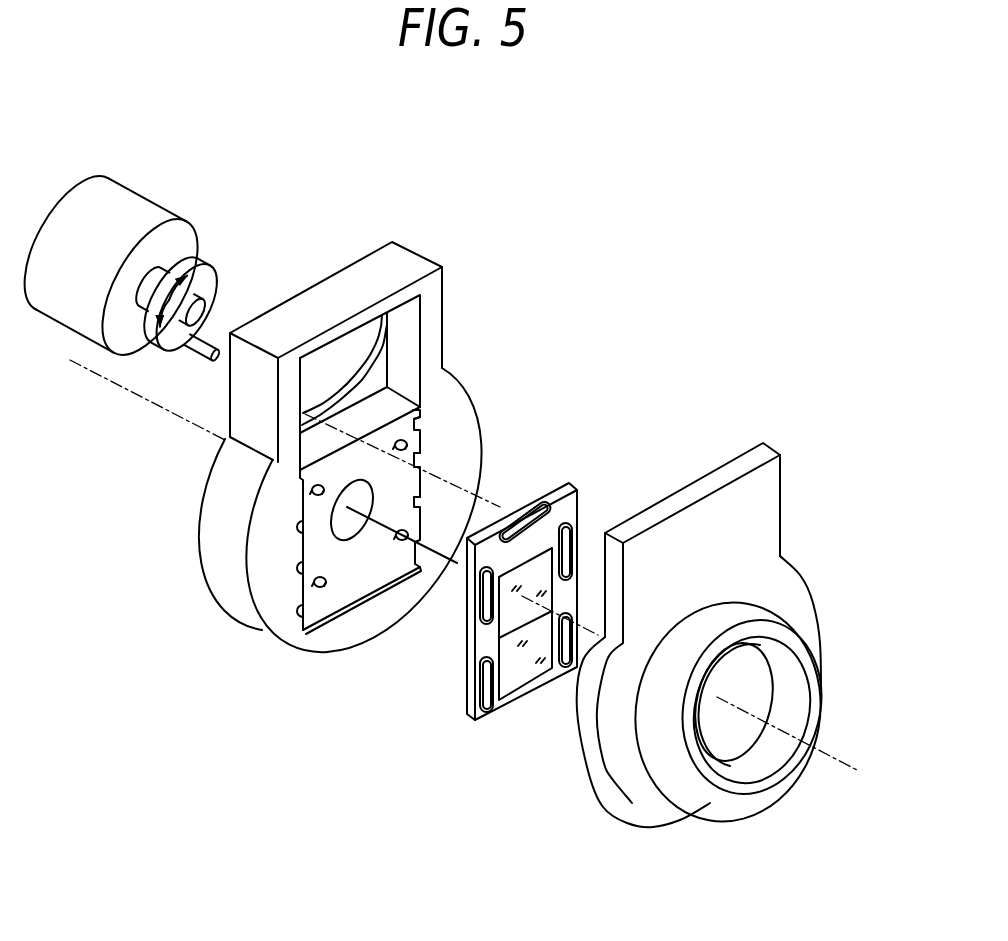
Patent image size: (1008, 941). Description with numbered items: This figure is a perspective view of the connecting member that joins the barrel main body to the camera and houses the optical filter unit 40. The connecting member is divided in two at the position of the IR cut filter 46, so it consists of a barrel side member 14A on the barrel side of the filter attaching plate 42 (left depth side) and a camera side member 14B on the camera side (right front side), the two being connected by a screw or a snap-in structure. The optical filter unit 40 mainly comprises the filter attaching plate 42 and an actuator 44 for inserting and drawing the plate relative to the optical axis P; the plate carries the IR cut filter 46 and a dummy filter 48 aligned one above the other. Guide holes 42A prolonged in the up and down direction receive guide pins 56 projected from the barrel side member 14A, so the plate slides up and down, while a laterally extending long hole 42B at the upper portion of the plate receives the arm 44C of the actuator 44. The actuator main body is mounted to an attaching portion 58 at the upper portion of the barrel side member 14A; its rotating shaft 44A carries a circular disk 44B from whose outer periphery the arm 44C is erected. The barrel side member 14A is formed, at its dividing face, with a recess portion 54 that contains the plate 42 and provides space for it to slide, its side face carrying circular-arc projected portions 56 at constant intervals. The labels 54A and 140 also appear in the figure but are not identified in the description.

The barrel side member 14A is at (458, 296).
The camera side member 14B is at (802, 503).
The optical filter unit 40 is at (609, 437).
The filter attaching plate 42 is at (569, 486).
The guide hole 42A is at (578, 530).
The long hole 42B is at (530, 518).
The actuator 44 is at (144, 205).
The rotating shaft 44A is at (208, 270).
The circular disk 44B is at (212, 262).
The arm 44C is at (198, 358).
The IR cut filter 46 is at (475, 668).
The dummy filter 48 is at (510, 697).
The recess portion 54 is at (348, 580).
The notched tabs 54A is at (299, 611).
The guide pin 56 is at (312, 492).
The attaching portion 58 is at (378, 345).
The lens mounting ring 140 is at (779, 657).
The optical axis P is at (850, 763).